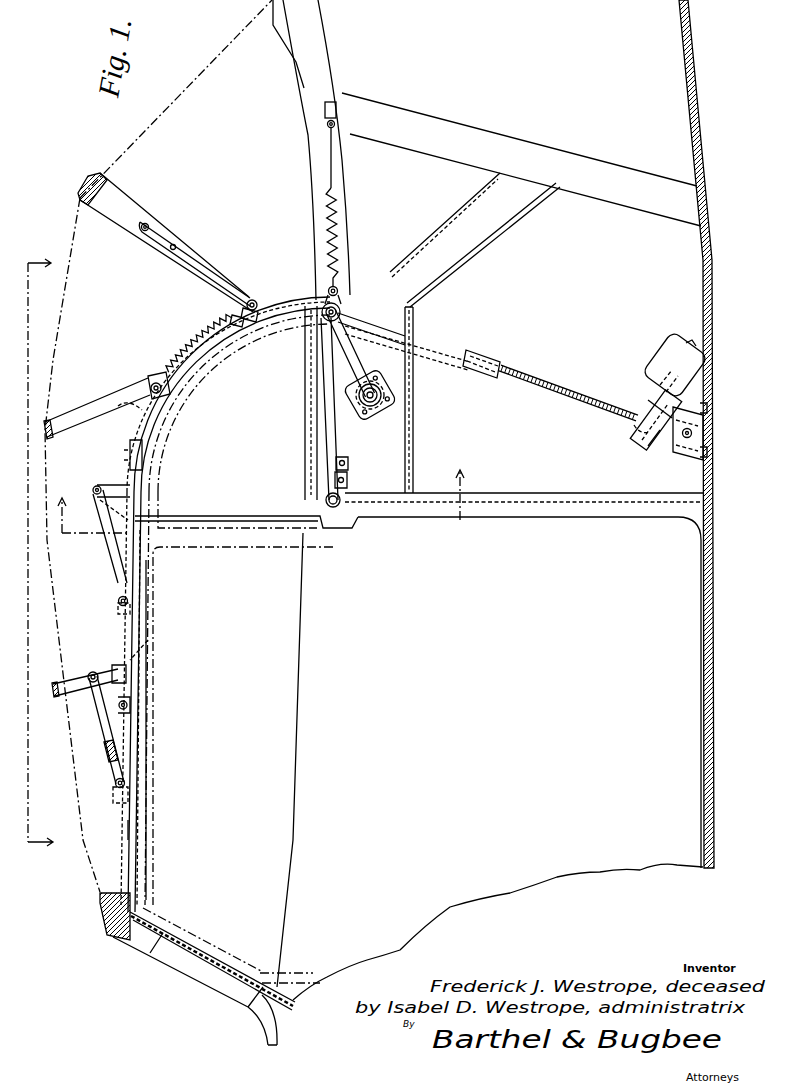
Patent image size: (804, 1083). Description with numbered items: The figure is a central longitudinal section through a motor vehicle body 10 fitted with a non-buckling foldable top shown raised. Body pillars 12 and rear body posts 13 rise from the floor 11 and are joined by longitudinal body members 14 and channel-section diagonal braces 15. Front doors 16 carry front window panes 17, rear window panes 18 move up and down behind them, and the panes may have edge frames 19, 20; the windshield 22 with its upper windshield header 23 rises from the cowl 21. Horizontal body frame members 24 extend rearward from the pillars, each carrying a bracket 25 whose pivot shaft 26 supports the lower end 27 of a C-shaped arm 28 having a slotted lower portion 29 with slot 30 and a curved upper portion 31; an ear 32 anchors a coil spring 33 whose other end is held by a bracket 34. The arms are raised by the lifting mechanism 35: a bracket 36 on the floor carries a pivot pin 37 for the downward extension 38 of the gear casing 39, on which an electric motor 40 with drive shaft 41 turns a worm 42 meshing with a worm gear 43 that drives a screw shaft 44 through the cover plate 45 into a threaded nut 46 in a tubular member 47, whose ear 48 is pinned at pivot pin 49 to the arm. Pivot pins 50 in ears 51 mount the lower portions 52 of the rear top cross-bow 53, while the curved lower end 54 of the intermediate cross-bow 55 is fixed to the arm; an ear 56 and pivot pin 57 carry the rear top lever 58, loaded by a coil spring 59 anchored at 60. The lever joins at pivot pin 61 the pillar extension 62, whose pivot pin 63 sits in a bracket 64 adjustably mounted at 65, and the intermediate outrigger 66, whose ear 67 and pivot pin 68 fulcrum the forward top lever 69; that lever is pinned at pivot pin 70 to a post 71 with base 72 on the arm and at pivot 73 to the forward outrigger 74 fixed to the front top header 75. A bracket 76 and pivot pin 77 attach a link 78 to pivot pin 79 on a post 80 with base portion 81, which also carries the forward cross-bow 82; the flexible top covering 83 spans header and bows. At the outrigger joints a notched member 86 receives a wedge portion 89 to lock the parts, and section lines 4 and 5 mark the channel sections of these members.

The motor vehicle body 10 is at (301, 409).
The floor 11 is at (703, 645).
The body pillars 12 is at (538, 493).
The rear body posts 13 is at (465, 130).
The longitudinal body members 14 is at (312, 152).
The diagonal braces 15 is at (430, 240).
The front doors 16 is at (300, 736).
The front window panes 17 is at (455, 863).
The rear window panes 18 is at (243, 671).
The edge frame 19 is at (200, 548).
The edge frame 20 is at (186, 402).
The cowl 21 is at (260, 1033).
The windshield 22 is at (191, 985).
The upper windshield header 23 is at (148, 953).
The horizontal body frame members 24 is at (412, 440).
The bracket 25 is at (368, 418).
The pivot pin or shaft 26 is at (375, 405).
The lower end 27 is at (386, 393).
The C-shaped arm 28 is at (286, 293).
The lower portion 29 is at (392, 362).
The longitudinal slot 30 is at (342, 352).
The curved upper portion 31 is at (247, 345).
The ear 32 is at (328, 290).
The coil spring 33 is at (339, 221).
The bracket 34 is at (322, 110).
The power-operated lifting mechanism 35 is at (645, 394).
The bracket 36 is at (700, 456).
The pivot pin or shaft 37 is at (684, 448).
The downward extension 38 is at (668, 442).
The gear casing 39 is at (650, 446).
The electric motor 40 is at (663, 350).
The drive shaft 41 is at (652, 380).
The worm 42 is at (680, 415).
The worm gear 43 is at (636, 428).
The screw shaft 44 is at (558, 386).
The gear casing cover plate 45 is at (630, 411).
The threaded nut 46 is at (469, 350).
The tubular member 47 is at (476, 370).
The ear 48 is at (341, 304).
The pivot pin 49 is at (345, 292).
The pivot pin 50 is at (250, 298).
The ear 51 is at (257, 305).
The lower portion 52 is at (205, 264).
The rear top cross-bow 53 is at (144, 206).
The curved lower end 54 is at (224, 365).
The intermediate top cross-bow 55 is at (110, 395).
The ear 56 is at (133, 411).
The pivot pin 57 is at (152, 378).
The rear top lever 58 is at (130, 442).
The coil spring 59 is at (195, 336).
The spring anchorage 60 is at (238, 317).
The pivot pin 61 is at (110, 514).
The pillar arm or pillar extension 62 is at (226, 516).
The pivot pin 63 is at (345, 508).
The bracket 64 is at (352, 462).
The adjustable mounting means 65 is at (347, 478).
The intermediate outrigger 66 is at (150, 575).
The ear 67 is at (116, 609).
The pivot pin 68 is at (118, 600).
The forward top lever 69 is at (110, 570).
The pivot pin 70 is at (97, 485).
The post 71 is at (115, 484).
The base 72 is at (124, 452).
The pivot 73 is at (130, 705).
The forward outrigger 74 is at (132, 830).
The front top header 75 is at (105, 925).
The bracket 76 is at (115, 795).
The pivot pin 77 is at (115, 783).
The link 78 is at (105, 740).
The pivot pin 79 is at (94, 670).
The post 80 is at (113, 667).
The base portion 81 is at (150, 650).
The forward top cross-bow 82 is at (70, 682).
The flexible top covering 83 is at (66, 774).
The notched member 86 is at (150, 555).
The V-shaped wedge portion 89 is at (180, 82).
The section line 4- 4 is at (259, 488).
The section line 5- 5 is at (51, 548).